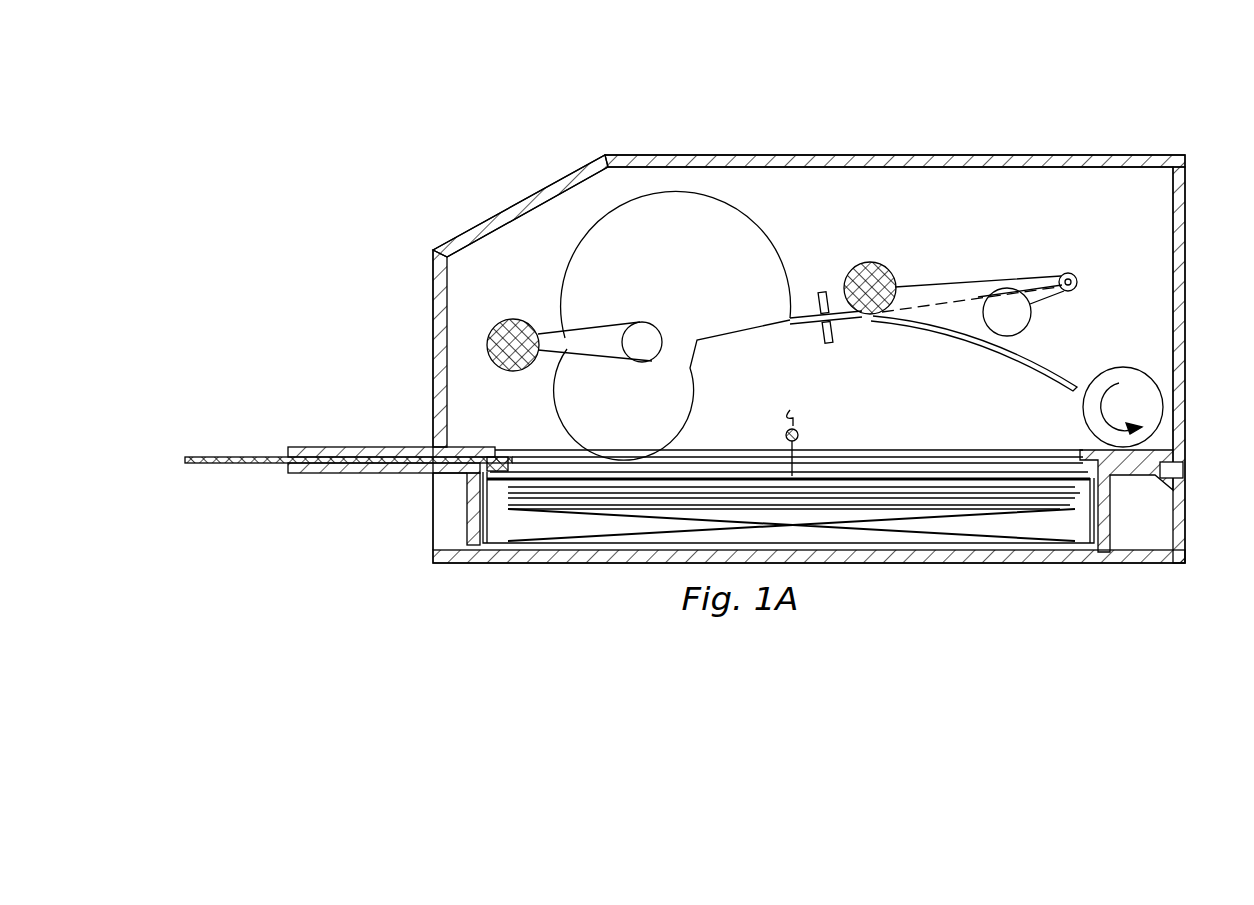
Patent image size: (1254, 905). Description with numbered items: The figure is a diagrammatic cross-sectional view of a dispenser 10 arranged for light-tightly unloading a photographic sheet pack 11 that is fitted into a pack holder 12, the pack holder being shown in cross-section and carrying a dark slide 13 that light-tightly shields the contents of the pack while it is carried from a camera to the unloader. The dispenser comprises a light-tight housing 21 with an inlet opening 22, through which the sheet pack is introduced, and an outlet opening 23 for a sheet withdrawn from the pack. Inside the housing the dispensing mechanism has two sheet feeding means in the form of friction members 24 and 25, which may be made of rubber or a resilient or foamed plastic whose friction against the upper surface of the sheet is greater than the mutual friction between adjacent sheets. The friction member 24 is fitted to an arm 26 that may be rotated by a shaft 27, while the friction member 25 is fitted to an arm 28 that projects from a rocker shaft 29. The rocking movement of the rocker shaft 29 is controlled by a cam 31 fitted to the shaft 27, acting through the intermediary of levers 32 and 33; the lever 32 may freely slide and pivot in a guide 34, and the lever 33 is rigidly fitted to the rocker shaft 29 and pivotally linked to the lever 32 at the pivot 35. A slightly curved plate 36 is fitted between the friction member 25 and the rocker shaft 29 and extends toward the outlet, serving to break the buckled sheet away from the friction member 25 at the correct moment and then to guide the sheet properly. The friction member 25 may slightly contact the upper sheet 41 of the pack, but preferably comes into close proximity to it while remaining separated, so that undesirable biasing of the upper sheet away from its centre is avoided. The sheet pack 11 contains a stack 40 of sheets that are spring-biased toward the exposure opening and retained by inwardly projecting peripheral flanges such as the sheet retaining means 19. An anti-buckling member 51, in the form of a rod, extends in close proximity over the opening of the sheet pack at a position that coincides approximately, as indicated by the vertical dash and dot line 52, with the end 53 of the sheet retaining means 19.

The dispenser 10 is at (594, 120).
The photographic sheet pack 11 is at (467, 527).
The pack holder 12 is at (378, 447).
The dark slide 13 is at (242, 466).
The sheet retaining means 19 is at (593, 478).
The light-tight housing 21 is at (862, 209).
The inlet opening 22 is at (448, 507).
The outlet opening 23 is at (1176, 446).
The friction member 24 is at (505, 322).
The friction member 25 is at (891, 272).
The arm 26 is at (610, 344).
The shaft 27 is at (650, 346).
The arm 28 is at (923, 293).
The rocker shaft 29 is at (1008, 317).
The cam 31 is at (627, 247).
The lever 32 is at (837, 323).
The lever 33 is at (1045, 299).
The guide 34 is at (819, 292).
The pivotal link 35 is at (1078, 274).
The slightly curved plate 36 is at (1040, 366).
The stack of sheets 40 is at (623, 497).
The upper sheet 41 is at (866, 475).
The anti-buckling member 51 is at (785, 436).
The vertical dash and dot line 52 is at (786, 405).
The end of sheet retaining means 53 is at (797, 476).